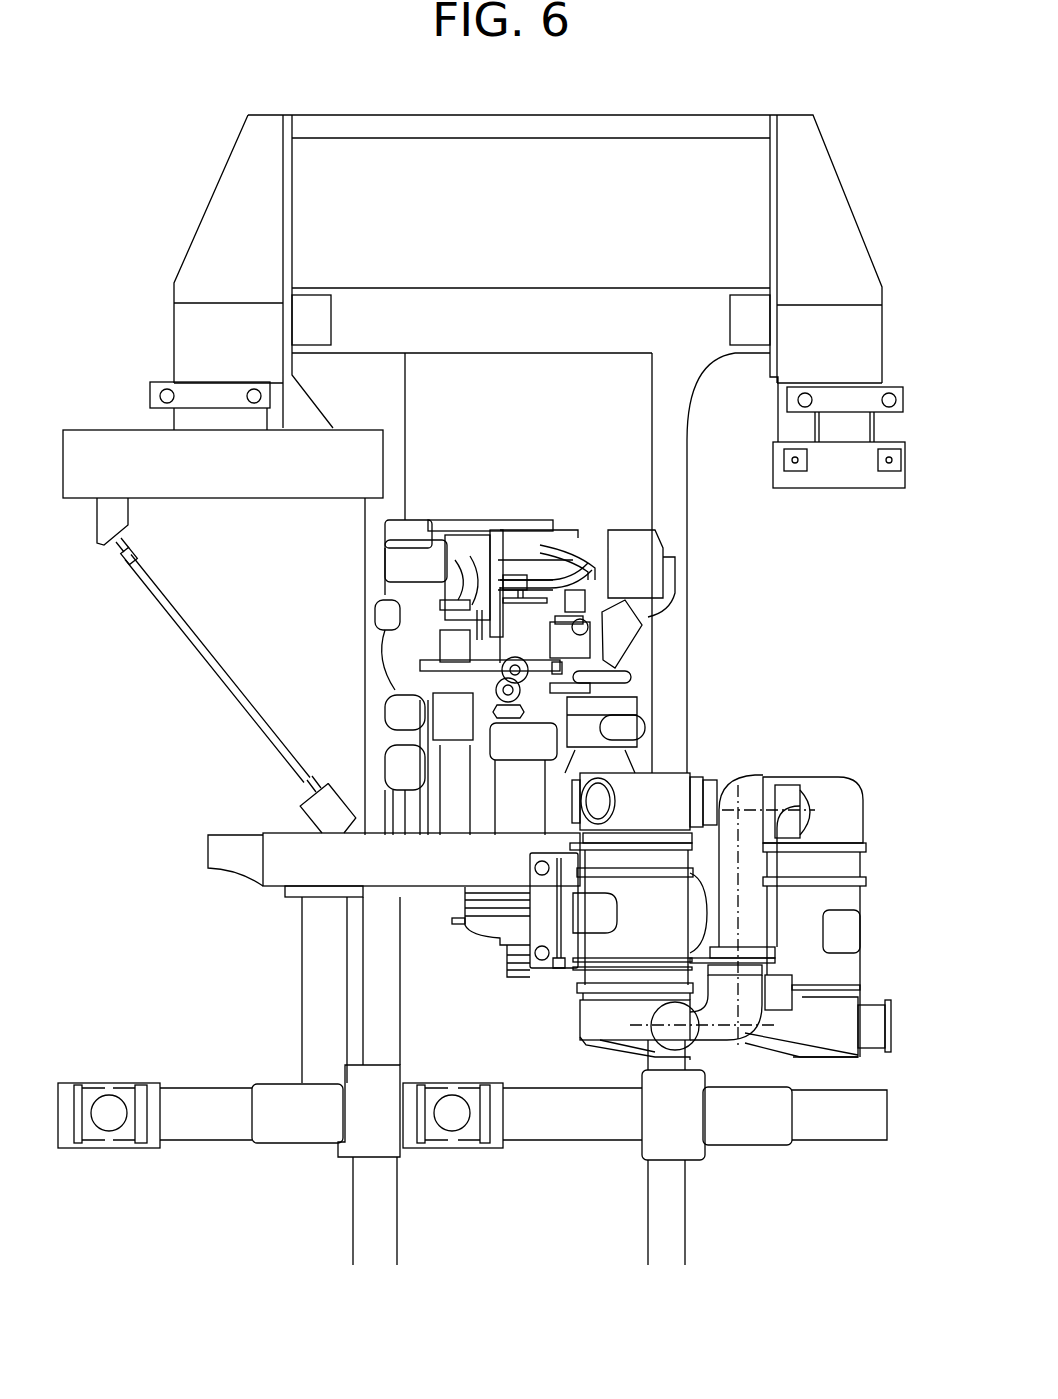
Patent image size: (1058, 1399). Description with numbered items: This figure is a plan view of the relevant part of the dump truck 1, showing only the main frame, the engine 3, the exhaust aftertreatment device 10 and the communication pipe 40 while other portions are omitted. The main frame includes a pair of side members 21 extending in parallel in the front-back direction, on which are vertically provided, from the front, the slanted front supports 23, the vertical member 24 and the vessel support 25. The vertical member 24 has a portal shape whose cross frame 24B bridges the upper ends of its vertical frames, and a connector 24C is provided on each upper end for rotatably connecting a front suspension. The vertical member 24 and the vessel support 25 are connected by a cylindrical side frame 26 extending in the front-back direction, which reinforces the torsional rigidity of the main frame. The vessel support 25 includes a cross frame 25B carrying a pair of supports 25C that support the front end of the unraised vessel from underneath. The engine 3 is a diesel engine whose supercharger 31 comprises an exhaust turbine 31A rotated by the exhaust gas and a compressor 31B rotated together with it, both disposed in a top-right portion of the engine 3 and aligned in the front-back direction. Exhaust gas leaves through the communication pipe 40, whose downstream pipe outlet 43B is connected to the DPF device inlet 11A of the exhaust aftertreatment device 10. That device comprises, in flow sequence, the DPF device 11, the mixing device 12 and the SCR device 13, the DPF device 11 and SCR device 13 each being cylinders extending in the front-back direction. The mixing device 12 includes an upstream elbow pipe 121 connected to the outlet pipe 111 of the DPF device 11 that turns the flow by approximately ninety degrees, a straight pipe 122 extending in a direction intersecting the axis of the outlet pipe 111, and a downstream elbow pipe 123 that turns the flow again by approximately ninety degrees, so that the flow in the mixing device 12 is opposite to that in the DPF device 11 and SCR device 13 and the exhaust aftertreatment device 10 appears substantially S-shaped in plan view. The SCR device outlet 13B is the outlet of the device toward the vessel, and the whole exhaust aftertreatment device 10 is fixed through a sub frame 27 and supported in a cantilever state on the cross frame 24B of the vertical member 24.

The dump truck 1 is at (601, 99).
The engine 3 is at (540, 515).
The exhaust aftertreatment device 10 is at (825, 749).
The DPF device 11 is at (590, 1017).
The DPF device inlet 11A is at (693, 780).
The downstream pipe outlet 43B is at (705, 800).
The outlet pipe 111 is at (675, 1033).
The mixing device 12 is at (773, 858).
The upstream elbow pipe 121 is at (741, 1032).
The straight pipe 122 is at (757, 928).
The downstream elbow pipe 123 is at (745, 777).
The SCR device 13 is at (827, 898).
The SCR device outlet 13B is at (893, 1023).
The communication pipe 40 is at (716, 777).
The side members 21 is at (366, 522).
The front supports 23 is at (182, 335).
The vertical member 24 is at (270, 818).
The cross frame 24B is at (418, 870).
The connector 24C is at (208, 852).
The vessel support 25 is at (512, 1175).
The cross frame 25B is at (578, 1130).
The supports 25C is at (285, 1130).
The side frame 26 is at (305, 997).
The sub frame 27 is at (540, 928).
The supercharger 31 is at (758, 652).
The exhaust turbine 31A is at (650, 727).
The compressor 31B is at (643, 677).